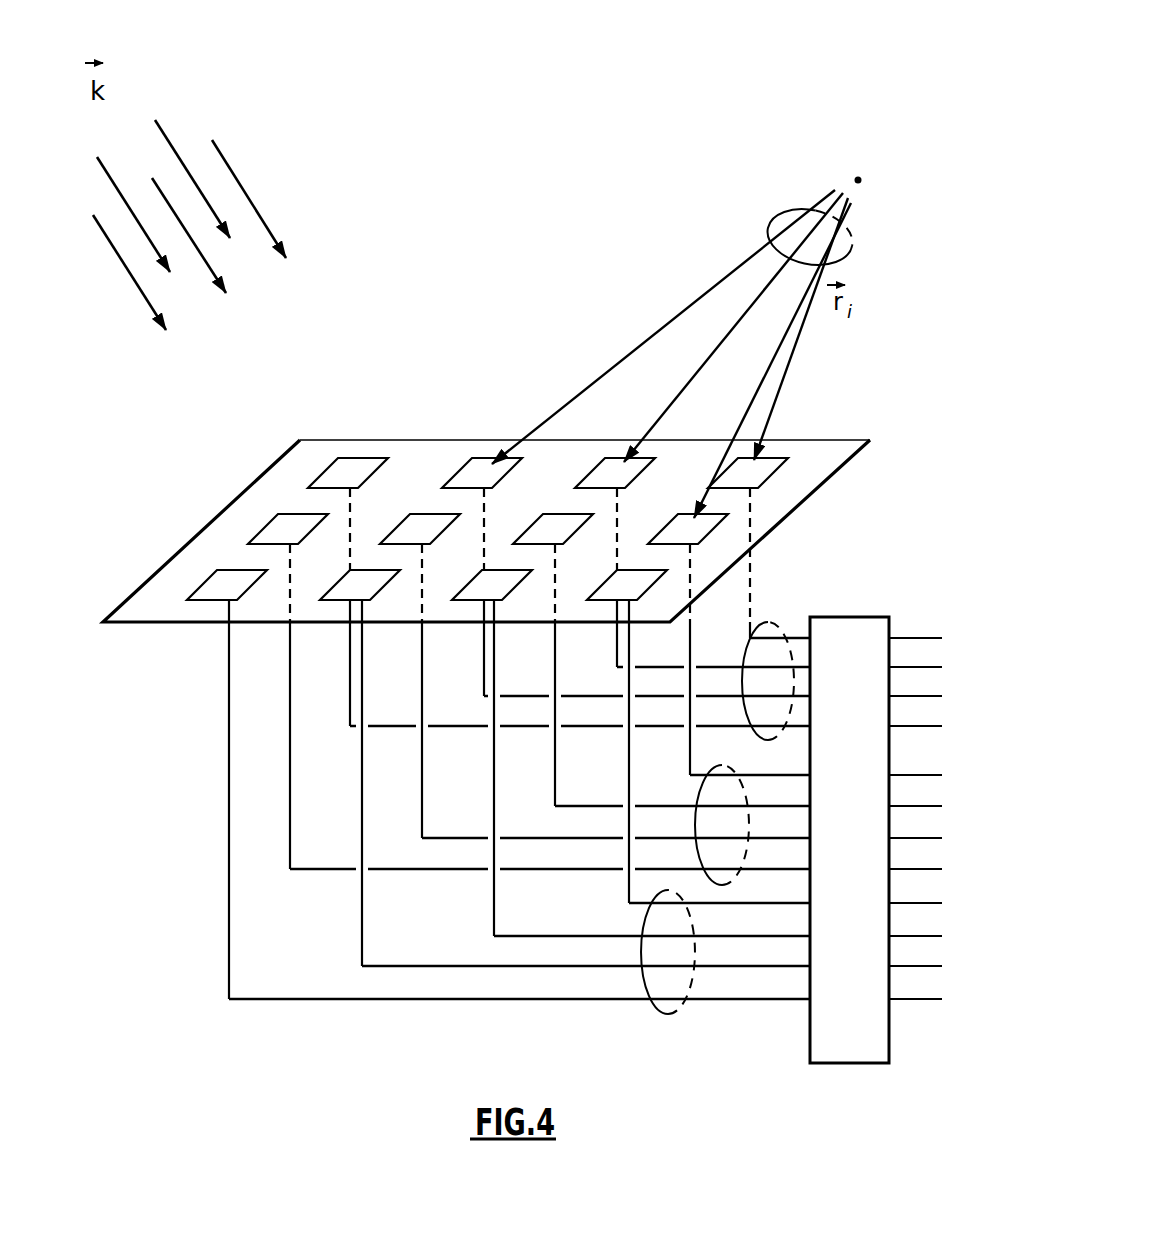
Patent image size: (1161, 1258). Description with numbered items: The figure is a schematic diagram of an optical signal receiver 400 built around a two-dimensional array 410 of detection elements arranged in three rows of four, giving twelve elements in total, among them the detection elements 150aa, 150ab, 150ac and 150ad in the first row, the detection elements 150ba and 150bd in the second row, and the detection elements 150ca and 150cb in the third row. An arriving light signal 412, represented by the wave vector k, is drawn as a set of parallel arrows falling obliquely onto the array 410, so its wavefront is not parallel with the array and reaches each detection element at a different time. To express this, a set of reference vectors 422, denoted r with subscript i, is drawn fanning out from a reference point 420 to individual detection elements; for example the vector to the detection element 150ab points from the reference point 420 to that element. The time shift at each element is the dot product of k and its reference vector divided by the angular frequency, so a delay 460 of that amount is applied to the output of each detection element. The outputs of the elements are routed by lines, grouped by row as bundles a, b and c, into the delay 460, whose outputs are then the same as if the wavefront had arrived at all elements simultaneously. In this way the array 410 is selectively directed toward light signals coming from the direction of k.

The optical signal receiver 400 is at (740, 56).
The arriving light signal 412 is at (252, 129).
The reference point 420 is at (888, 167).
The reference vectors 422 is at (772, 219).
The two-dimensional array 410 is at (847, 468).
The detection element 150aa is at (320, 472).
The detection element 150ab is at (477, 468).
The detection element 150ac is at (582, 482).
The detection element 150ad is at (775, 460).
The detection element 150ba is at (258, 528).
The detection element 150bd is at (715, 533).
The detection element 150ca is at (200, 582).
The detection element 150cb is at (650, 592).
The delay 460 is at (809, 1052).
The first row feed line group a is at (777, 620).
The second row feed line group b is at (724, 762).
The third row feed line group c is at (660, 1013).